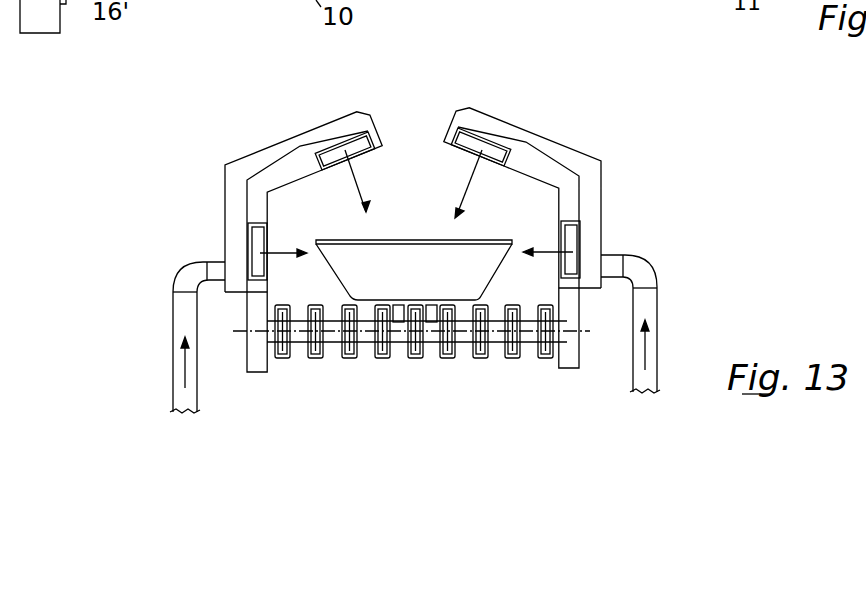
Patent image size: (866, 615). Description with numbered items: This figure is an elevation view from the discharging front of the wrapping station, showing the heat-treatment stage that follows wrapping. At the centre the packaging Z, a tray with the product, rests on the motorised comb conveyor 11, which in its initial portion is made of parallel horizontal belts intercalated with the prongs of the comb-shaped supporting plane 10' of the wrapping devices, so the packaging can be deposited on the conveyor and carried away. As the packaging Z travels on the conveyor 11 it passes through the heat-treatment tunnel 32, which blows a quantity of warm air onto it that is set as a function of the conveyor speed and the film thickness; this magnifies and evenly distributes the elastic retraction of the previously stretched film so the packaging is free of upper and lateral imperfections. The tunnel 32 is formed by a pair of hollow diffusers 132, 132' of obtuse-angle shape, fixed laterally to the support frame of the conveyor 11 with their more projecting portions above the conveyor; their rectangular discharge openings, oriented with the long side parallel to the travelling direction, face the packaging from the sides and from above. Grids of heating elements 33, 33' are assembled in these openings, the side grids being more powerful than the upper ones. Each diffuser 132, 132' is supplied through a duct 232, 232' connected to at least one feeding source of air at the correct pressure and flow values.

The hollow diffuser 132 is at (269, 228).
The hollow diffuser 132' is at (551, 222).
The heating element 33 is at (275, 182).
The heating element 33' is at (558, 179).
The heat-treatment tunnel 32 is at (388, 130).
The duct 232 is at (142, 337).
The duct 232' is at (682, 324).
The packaging Z is at (427, 236).
The comb-shaped supporting plane 10' is at (411, 353).
The motorised comb conveyor 11 is at (343, 363).